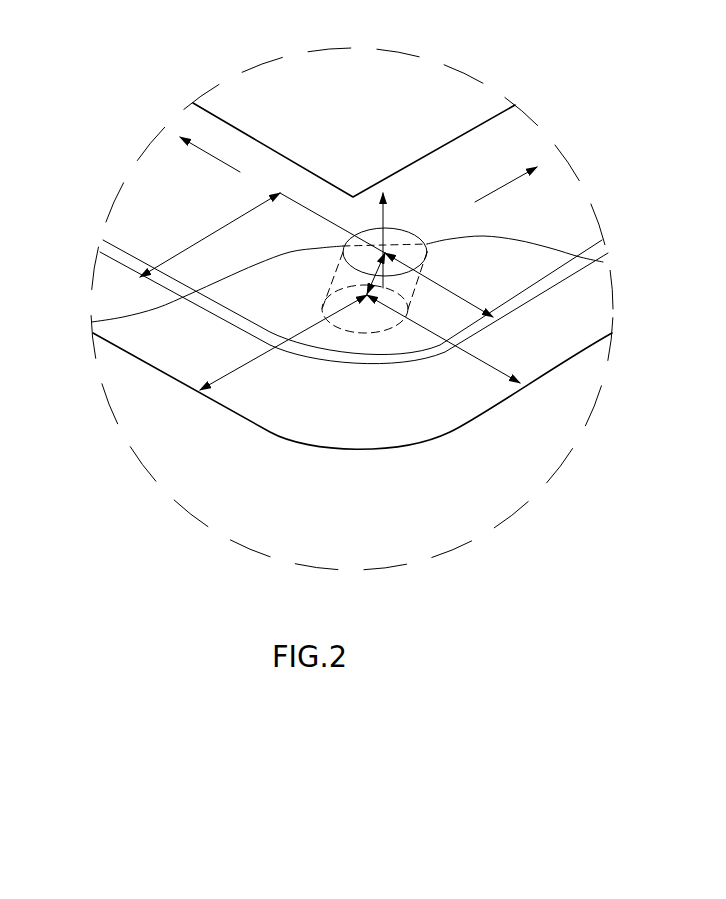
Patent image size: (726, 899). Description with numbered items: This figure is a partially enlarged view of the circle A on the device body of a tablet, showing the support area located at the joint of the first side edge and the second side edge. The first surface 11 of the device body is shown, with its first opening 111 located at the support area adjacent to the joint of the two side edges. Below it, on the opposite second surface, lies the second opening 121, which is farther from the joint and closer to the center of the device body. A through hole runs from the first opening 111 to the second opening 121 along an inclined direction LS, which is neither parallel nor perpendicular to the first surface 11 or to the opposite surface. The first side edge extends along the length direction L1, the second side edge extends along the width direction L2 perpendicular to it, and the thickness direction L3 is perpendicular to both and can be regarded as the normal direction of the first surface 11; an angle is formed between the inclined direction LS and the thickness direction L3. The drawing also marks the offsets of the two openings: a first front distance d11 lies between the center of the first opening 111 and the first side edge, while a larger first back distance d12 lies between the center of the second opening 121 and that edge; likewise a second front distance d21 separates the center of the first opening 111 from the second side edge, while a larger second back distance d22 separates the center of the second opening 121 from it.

The first surface 11 is at (173, 197).
The first opening 111 is at (590, 255).
The second opening 121 is at (383, 328).
The inclined direction LS is at (92, 322).
The circle A is at (557, 143).
The length direction L1 is at (210, 161).
The width direction L2 is at (506, 184).
The thickness direction L3 is at (385, 218).
The first front distance d11 is at (262, 235).
The first back distance d12 is at (255, 312).
The second front distance d21 is at (439, 285).
The second back distance d22 is at (500, 370).